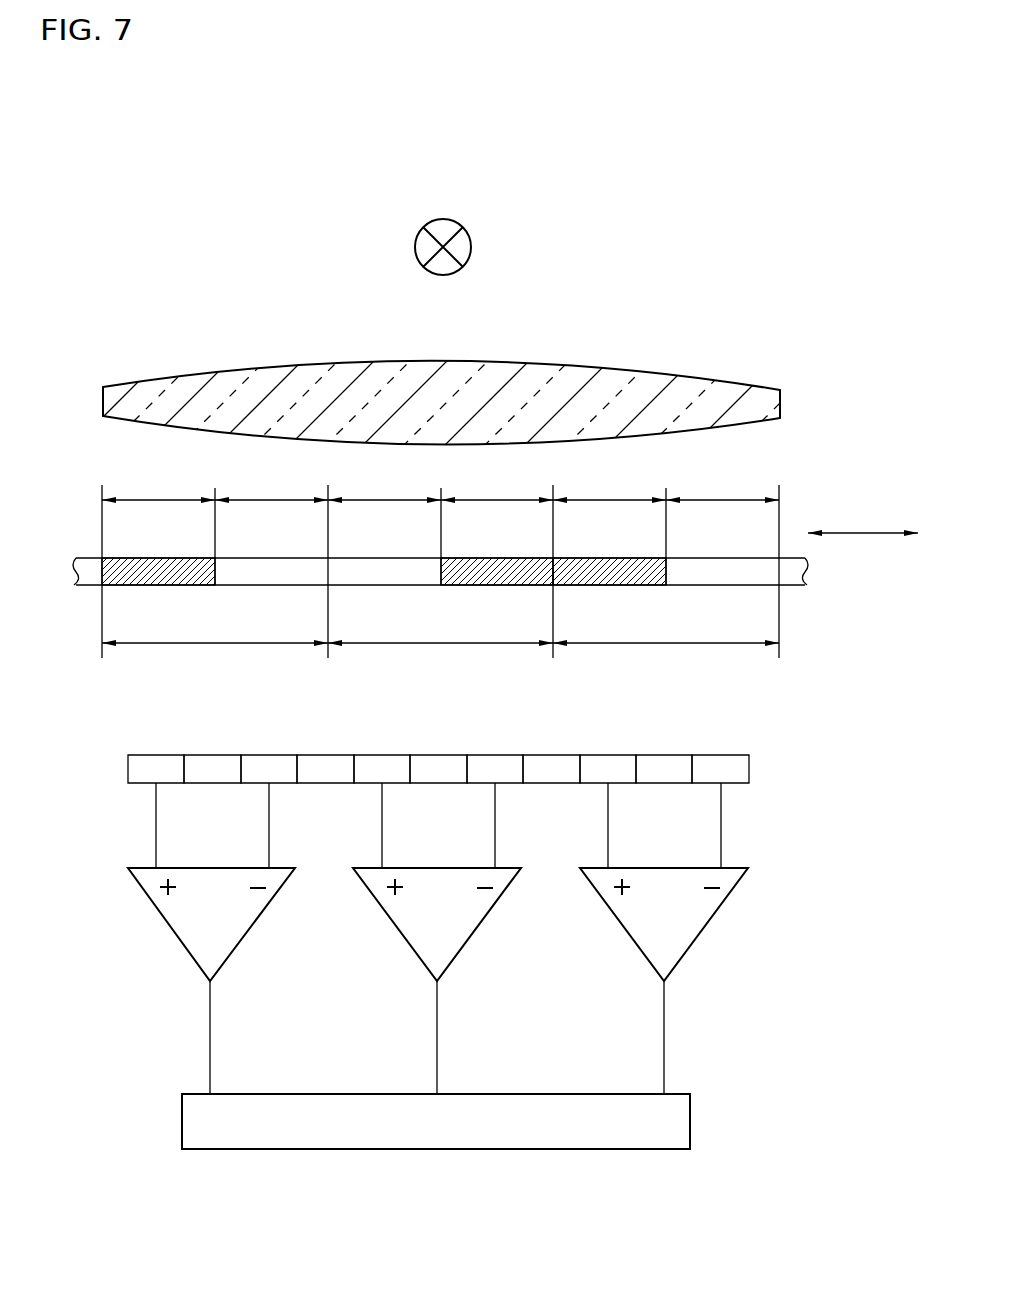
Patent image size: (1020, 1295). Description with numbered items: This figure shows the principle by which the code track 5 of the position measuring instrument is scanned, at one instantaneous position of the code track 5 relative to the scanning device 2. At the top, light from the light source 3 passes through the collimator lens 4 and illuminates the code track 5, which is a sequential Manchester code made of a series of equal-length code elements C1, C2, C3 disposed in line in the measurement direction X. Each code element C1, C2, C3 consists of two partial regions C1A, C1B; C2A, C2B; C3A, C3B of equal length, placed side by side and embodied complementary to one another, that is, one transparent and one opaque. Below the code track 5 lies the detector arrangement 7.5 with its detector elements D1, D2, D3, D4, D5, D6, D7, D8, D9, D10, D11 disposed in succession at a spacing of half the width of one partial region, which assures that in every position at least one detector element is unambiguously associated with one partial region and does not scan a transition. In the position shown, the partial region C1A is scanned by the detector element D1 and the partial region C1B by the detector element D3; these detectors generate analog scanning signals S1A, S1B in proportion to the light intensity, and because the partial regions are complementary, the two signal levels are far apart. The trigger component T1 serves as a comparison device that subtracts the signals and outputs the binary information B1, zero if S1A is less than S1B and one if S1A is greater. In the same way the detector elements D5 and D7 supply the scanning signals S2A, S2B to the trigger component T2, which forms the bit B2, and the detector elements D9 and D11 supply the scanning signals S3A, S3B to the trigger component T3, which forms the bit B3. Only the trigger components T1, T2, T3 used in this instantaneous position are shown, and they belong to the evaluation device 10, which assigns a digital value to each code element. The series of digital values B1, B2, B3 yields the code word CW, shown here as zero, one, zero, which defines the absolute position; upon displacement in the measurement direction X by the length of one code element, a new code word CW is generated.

The scanning device 2 is at (480, 882).
The light source 3 is at (464, 231).
The collimator lens 4 is at (120, 400).
The code track 5 is at (88, 570).
The detector arrangement 7.5 is at (383, 739).
The evaluation device 10 is at (442, 979).
The measurement direction X is at (863, 514).
The code element C1 is at (215, 623).
The code element C2 is at (440, 623).
The code element C3 is at (666, 623).
The partial region C1A is at (158, 483).
The partial region C1B is at (271, 483).
The partial region C2A is at (384, 483).
The partial region C2B is at (497, 483).
The partial region C3A is at (609, 483).
The partial region C3B is at (722, 483).
The detector element D1 is at (151, 770).
The detector element D2 is at (208, 770).
The detector element D3 is at (264, 770).
The detector element D4 is at (321, 770).
The detector element D5 is at (377, 770).
The detector element D6 is at (433, 770).
The detector element D7 is at (490, 770).
The detector element D8 is at (546, 770).
The detector element D9 is at (603, 770).
The detector element D10 is at (659, 770).
The detector element D11 is at (716, 770).
The scanning signal S1A is at (156, 842).
The scanning signal S1B is at (269, 842).
The scanning signal S2A is at (382, 842).
The scanning signal S2B is at (495, 842).
The scanning signal S3A is at (608, 842).
The scanning signal S3B is at (721, 842).
The trigger component T1 is at (234, 916).
The trigger component T2 is at (461, 916).
The trigger component T3 is at (688, 916).
The binary information B1 is at (210, 1050).
The binary information B2 is at (437, 1050).
The binary information B3 is at (664, 1050).
The code word CW is at (677, 1123).